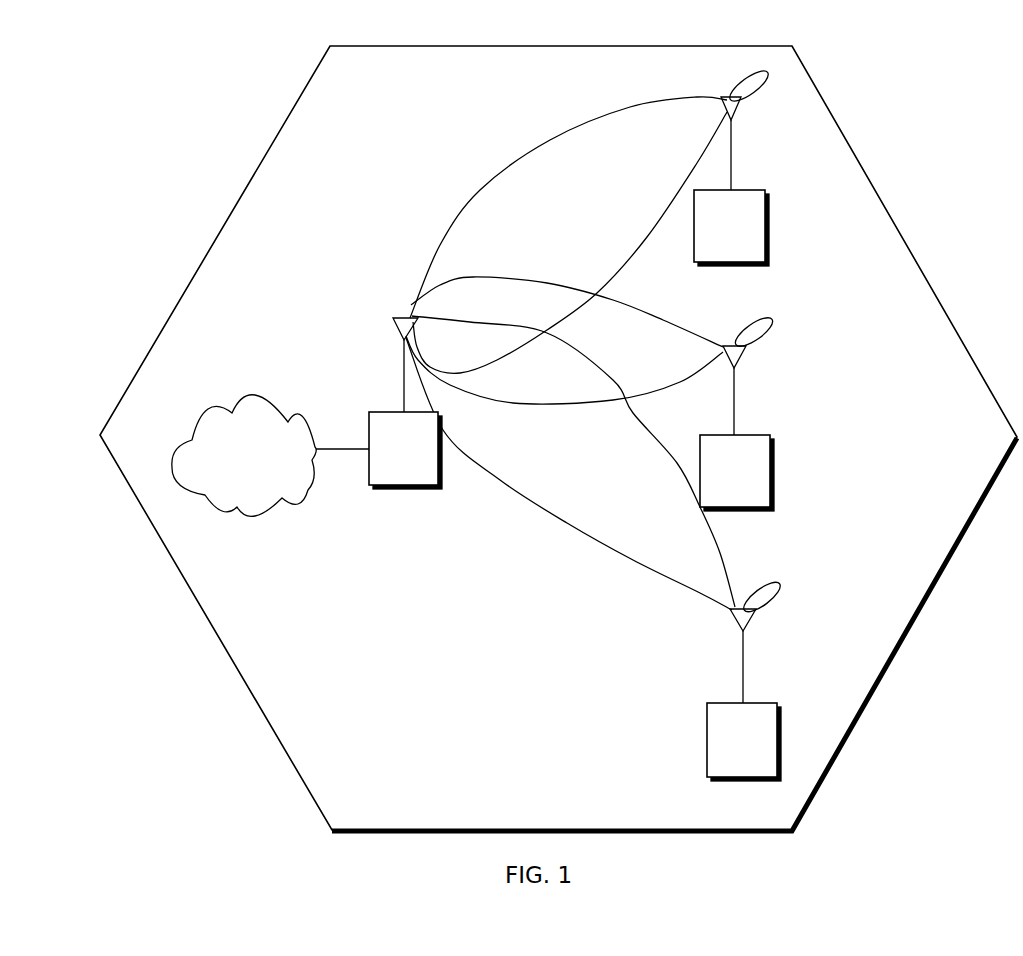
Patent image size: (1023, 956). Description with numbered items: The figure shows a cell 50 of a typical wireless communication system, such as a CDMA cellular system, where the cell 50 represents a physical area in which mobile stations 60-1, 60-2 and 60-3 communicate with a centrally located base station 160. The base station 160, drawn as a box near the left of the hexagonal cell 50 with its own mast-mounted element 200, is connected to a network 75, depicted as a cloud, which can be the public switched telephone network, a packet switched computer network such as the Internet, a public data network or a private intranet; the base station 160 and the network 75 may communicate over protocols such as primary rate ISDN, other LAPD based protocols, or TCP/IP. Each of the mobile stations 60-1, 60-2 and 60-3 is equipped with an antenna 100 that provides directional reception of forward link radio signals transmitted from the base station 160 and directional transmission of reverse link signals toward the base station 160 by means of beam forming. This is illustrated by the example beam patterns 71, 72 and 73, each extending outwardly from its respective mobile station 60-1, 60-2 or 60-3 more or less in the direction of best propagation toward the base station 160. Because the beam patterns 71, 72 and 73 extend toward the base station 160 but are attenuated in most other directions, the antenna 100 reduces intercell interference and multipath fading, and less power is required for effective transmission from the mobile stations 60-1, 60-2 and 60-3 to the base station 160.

The cell 50 is at (421, 691).
The mobile station 60-1 is at (731, 228).
The mobile station 60-2 is at (737, 473).
The mobile station 60-3 is at (744, 742).
The beam pattern 71 is at (550, 142).
The beam pattern 72 is at (641, 307).
The beam pattern 73 is at (723, 553).
The network 75 is at (252, 393).
The antenna 100 is at (731, 156).
The base station 160 is at (405, 450).
The base station antenna 200 is at (404, 380).